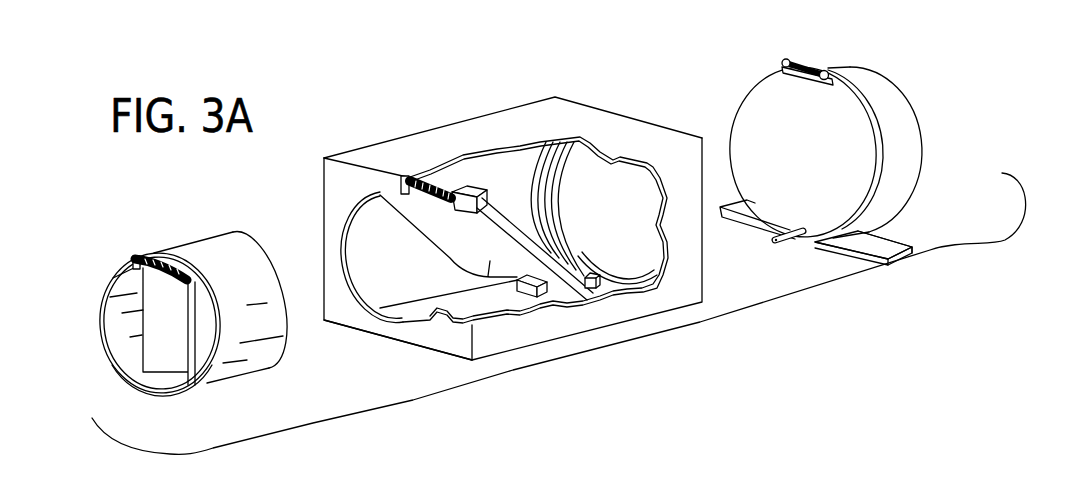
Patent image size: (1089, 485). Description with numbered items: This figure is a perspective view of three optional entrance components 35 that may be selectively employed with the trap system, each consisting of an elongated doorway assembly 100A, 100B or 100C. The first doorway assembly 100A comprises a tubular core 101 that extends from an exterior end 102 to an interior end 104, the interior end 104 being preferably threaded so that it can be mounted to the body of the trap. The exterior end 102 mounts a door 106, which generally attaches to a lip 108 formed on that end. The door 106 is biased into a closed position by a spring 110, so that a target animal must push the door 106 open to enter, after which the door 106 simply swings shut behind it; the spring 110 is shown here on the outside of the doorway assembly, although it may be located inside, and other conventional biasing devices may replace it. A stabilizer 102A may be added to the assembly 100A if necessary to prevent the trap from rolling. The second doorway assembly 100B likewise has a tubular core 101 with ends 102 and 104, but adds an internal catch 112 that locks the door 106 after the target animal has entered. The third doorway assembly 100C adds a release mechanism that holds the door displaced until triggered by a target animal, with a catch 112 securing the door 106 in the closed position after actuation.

The entrance component 35 is at (428, 85).
The doorway assembly 100A is at (111, 247).
The doorway assembly 100B is at (470, 111).
The doorway assembly 100C is at (944, 114).
The tubular core 101 is at (268, 363).
The exterior end 102 is at (167, 395).
The stabilizer 102A is at (888, 245).
The interior end 104 is at (242, 260).
The door 106 is at (160, 340).
The lip 108 is at (140, 257).
The spring 110 is at (157, 258).
The catch 112 is at (521, 292).